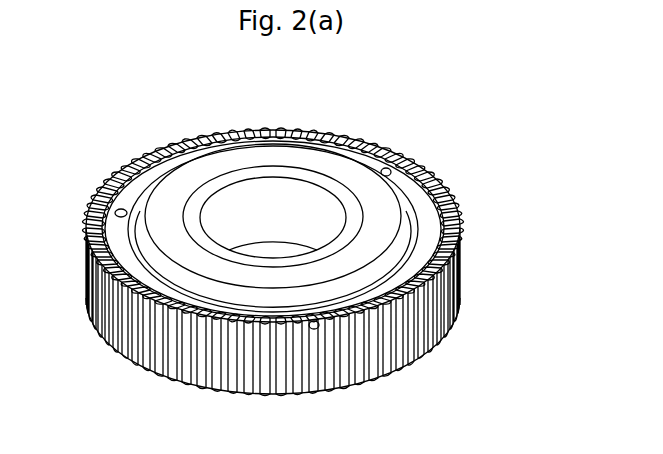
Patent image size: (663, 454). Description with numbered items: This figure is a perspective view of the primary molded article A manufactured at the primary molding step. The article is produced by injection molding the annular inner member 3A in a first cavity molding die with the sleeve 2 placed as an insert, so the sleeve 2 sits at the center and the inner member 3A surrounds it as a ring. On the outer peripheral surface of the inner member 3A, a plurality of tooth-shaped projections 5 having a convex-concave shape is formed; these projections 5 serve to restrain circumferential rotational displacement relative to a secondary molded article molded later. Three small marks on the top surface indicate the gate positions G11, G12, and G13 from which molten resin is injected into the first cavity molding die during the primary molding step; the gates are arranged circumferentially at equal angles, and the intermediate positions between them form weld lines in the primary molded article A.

The primary molded article A is at (453, 170).
The tooth-shaped projections 5 is at (475, 243).
The sleeve 2 is at (248, 173).
The inner member 3A is at (305, 160).
The gate position G11 is at (388, 167).
The gate position G12 is at (318, 329).
The gate position G13 is at (121, 208).